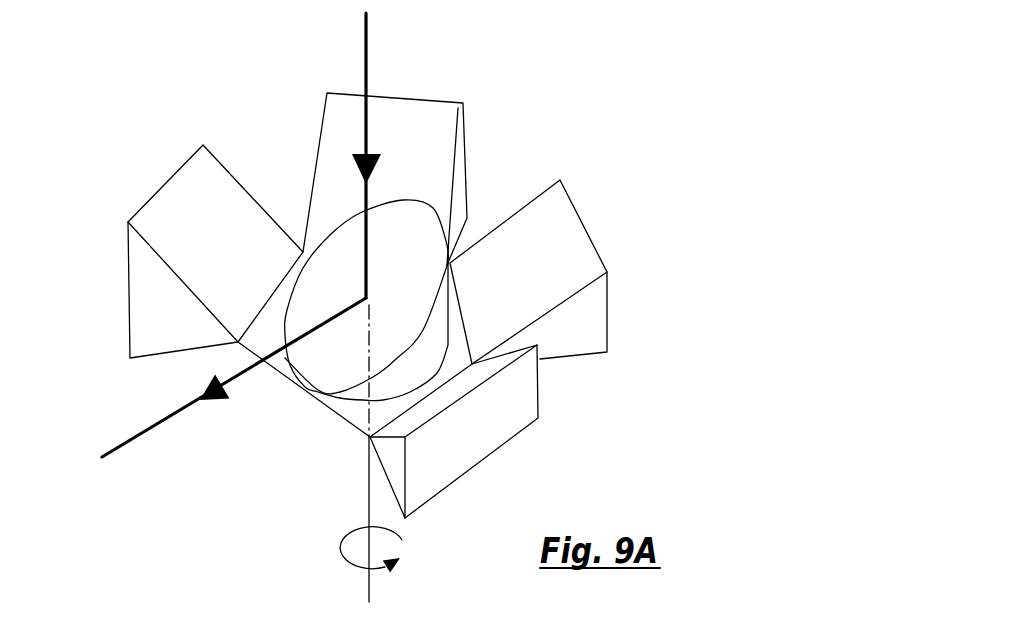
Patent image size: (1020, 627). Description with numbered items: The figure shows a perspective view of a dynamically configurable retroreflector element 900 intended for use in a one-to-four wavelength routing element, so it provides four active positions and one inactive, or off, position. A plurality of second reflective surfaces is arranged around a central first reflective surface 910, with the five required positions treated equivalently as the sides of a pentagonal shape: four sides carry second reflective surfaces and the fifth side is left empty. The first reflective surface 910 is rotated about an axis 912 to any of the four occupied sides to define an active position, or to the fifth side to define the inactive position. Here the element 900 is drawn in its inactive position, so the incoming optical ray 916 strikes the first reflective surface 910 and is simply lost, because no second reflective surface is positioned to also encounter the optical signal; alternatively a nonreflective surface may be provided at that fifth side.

The retroreflector element 900 is at (145, 380).
The first reflective surface 910 is at (333, 352).
The axis 912 is at (370, 504).
The optical ray 916 is at (367, 60).